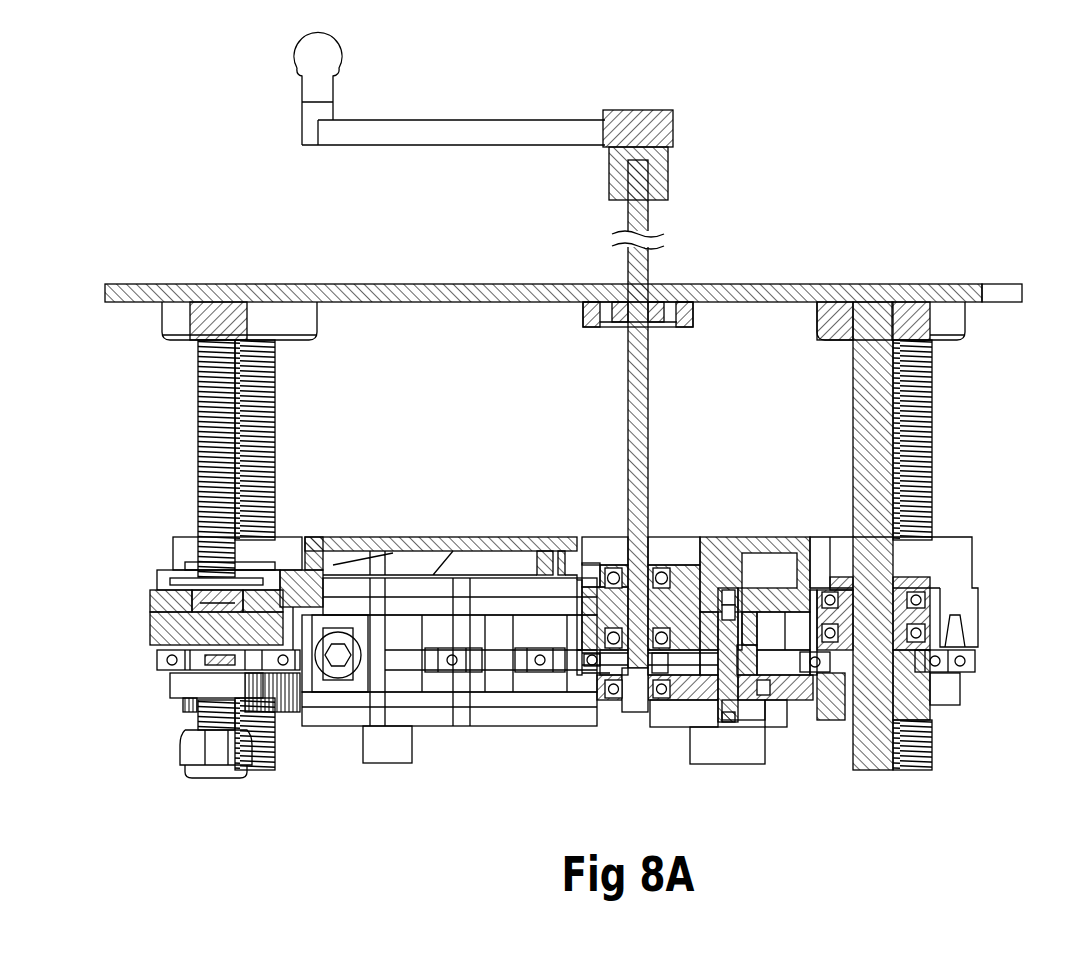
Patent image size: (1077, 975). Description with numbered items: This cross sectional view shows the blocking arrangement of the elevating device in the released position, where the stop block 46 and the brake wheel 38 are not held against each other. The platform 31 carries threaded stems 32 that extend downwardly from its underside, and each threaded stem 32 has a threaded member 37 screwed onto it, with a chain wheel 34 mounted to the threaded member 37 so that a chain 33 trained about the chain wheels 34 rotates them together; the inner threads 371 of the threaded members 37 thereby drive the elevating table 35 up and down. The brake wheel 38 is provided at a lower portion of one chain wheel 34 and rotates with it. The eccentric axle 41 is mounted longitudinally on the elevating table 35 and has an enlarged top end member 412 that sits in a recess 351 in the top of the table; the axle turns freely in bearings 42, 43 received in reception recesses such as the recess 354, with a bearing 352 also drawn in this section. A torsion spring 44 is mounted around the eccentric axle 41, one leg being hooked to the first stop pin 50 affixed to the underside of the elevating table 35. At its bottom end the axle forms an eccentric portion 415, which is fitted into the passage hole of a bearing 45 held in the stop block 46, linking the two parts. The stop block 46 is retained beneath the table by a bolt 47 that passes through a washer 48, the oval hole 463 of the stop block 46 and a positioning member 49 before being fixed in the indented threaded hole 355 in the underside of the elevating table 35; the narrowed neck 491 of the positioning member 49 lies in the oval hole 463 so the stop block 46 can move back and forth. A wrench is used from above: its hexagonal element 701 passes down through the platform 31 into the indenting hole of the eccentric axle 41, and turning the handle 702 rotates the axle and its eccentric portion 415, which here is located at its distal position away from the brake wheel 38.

The handle 702 is at (457, 118).
The hexagonal element 701 is at (627, 262).
The platform 31 is at (770, 284).
The threaded stem 32 is at (240, 400).
The elevating table 35 is at (418, 537).
The bearing 352 is at (588, 568).
The bearing 42 is at (628, 545).
The enlarged top end member 412 is at (663, 565).
The recess 351 is at (746, 529).
The reception recess 354 is at (680, 600).
The indented threaded hole 355 is at (752, 575).
The first stop pin 50 is at (742, 640).
The threaded member 37 is at (906, 584).
The inner threads 371 is at (918, 645).
The chain 33 is at (975, 660).
The chain wheel 34 is at (918, 673).
The brake wheel 38 is at (932, 720).
The eccentric axle 41 is at (598, 603).
The bearing 43 is at (598, 618).
The torsion spring 44 is at (598, 652).
The bearing 45 is at (606, 668).
The eccentric portion 415 is at (638, 702).
The stop block 46 is at (690, 645).
The positioning member 49 is at (725, 720).
The oval hole 463 is at (705, 700).
The bolt 47 is at (737, 712).
The washer 48 is at (748, 690).
The narrowed neck 491 is at (765, 665).